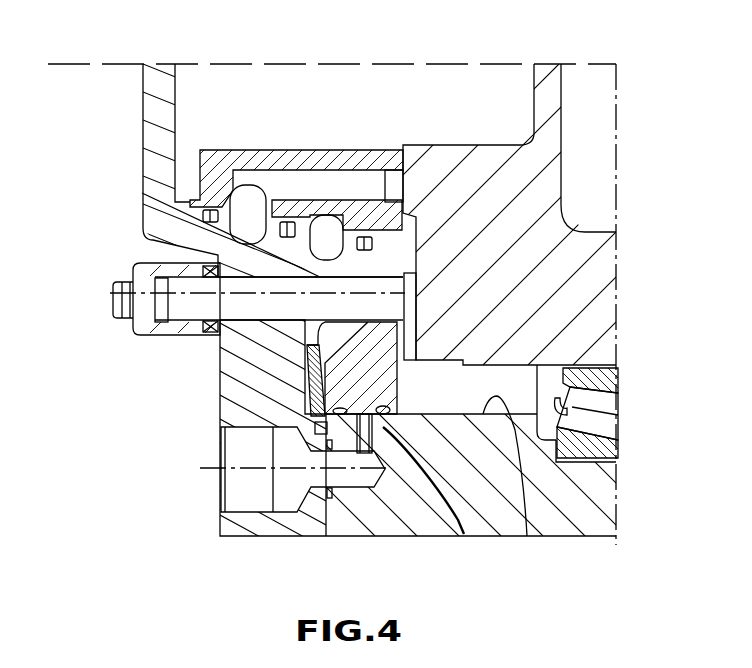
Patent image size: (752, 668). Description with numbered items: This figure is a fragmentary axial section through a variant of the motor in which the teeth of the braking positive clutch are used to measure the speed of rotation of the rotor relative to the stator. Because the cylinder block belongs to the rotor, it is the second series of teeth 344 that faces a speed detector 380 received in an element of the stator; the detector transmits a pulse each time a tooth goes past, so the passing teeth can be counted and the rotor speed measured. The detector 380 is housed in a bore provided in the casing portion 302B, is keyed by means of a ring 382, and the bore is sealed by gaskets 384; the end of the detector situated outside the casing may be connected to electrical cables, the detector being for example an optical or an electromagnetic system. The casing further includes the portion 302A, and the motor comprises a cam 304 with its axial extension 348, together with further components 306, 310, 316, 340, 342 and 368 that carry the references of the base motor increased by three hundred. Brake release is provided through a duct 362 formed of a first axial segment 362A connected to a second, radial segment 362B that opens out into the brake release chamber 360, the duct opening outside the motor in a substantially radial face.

The lower housing part 302A is at (586, 521).
The portion of the casing 302B is at (150, 160).
The shaft 304 is at (527, 536).
The bearing carrier body 306 is at (548, 168).
The axis of rotation 310 is at (448, 62).
The roller bearing 316 is at (288, 152).
The ring 340 is at (384, 388).
The gap 342 is at (418, 388).
The second series of teeth 344 is at (413, 323).
The curved surface 348 is at (464, 536).
The brake release chamber 360 is at (369, 456).
The brake release duct 362 is at (324, 490).
The first axial segment 362A is at (280, 489).
The second segment 362B is at (365, 454).
The spring element 368 is at (305, 390).
The speed detector 380 is at (180, 307).
The ring 382 is at (215, 257).
The gaskets 384 is at (204, 330).